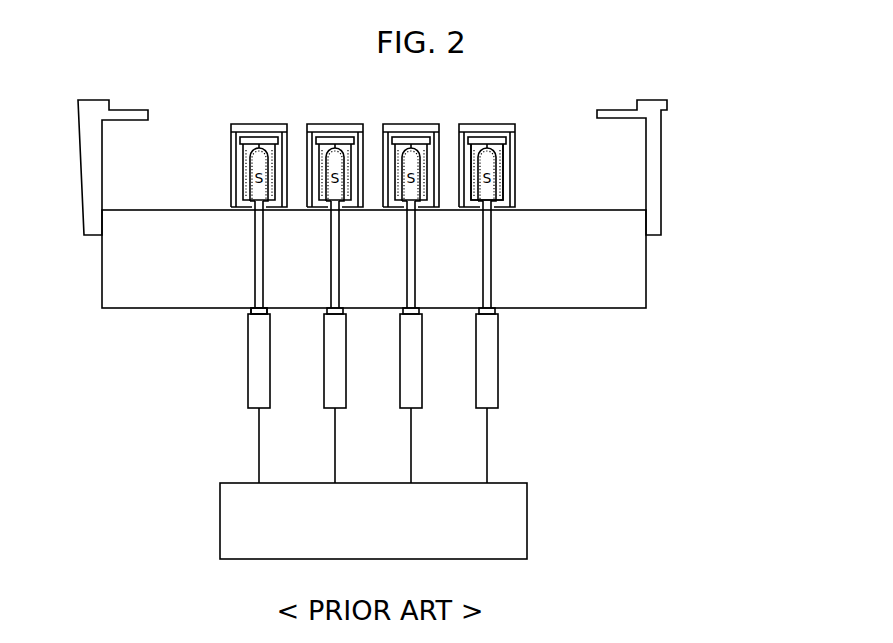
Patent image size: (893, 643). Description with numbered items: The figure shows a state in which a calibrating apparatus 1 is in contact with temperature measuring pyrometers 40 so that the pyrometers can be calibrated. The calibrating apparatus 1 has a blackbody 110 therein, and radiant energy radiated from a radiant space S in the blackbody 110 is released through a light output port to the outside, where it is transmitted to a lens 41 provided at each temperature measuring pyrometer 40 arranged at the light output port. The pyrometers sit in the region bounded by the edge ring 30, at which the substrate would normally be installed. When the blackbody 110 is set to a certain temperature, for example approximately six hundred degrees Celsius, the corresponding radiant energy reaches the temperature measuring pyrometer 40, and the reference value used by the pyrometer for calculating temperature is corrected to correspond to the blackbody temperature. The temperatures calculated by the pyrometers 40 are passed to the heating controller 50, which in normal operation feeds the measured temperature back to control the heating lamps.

The calibrating apparatus 1 is at (519, 214).
The edge ring 30 is at (662, 106).
The temperature measuring pyrometer 40 is at (247, 360).
The lens 41 is at (251, 310).
The heating controller 50 is at (219, 523).
The blackbody 110 is at (506, 188).